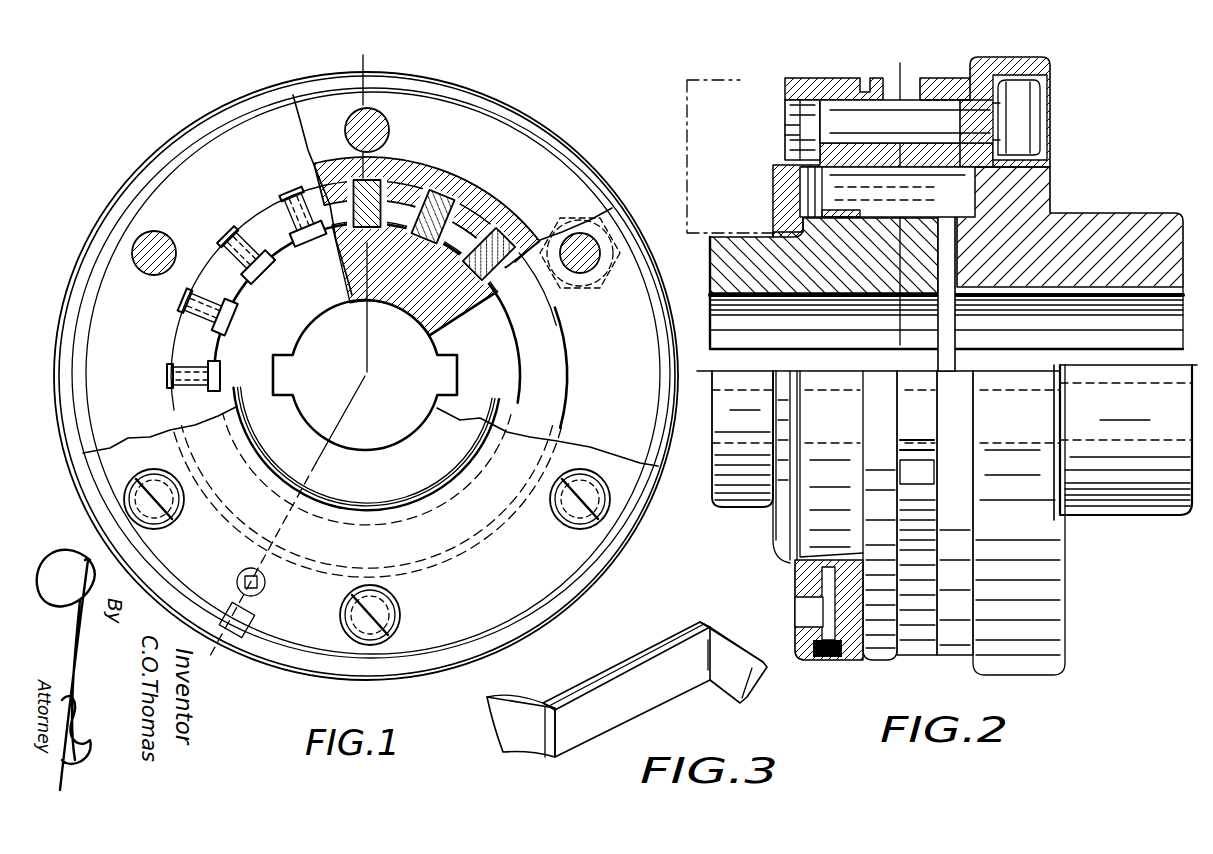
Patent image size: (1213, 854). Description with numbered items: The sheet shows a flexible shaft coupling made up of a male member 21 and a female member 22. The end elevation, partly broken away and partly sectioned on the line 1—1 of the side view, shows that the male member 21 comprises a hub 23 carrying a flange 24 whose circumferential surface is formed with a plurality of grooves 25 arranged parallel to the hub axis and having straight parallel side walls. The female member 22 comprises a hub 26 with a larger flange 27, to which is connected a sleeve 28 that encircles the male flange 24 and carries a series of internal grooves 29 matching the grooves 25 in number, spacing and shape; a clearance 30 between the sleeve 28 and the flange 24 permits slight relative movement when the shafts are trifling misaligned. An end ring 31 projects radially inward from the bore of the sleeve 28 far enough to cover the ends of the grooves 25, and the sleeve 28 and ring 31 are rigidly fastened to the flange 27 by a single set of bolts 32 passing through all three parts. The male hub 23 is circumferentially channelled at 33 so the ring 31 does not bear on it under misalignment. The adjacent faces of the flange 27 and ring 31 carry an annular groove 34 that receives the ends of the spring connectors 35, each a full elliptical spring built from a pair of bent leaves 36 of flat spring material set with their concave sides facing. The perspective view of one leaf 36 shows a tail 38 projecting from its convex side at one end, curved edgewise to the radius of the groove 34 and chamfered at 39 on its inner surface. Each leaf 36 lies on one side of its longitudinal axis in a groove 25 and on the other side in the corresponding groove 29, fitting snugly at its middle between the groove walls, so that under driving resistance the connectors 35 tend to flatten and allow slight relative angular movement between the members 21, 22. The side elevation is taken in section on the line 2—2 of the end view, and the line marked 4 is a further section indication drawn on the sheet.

In FIG. 2, the section line 1— 1 is at (900, 193).
In FIG. 1, the section line 2— 2 is at (280, 361).
In FIG. 2, the section line 4- 4 is at (800, 183).
In FIG. 1, the male member 21 is at (453, 300).
In FIG. 2, the male member 21 is at (757, 490).
In FIG. 1, the female member 22 is at (367, 376).
In FIG. 2, the female member 22 is at (1123, 474).
In FIG. 1, the hub 23 is at (367, 366).
In FIG. 2, the hub 23 is at (712, 253).
In FIG. 1, the flange 24 is at (365, 346).
In FIG. 2, the flange 24 is at (897, 227).
In FIG. 1, the grooves 25 is at (225, 322).
In FIG. 2, the grooves 25 is at (870, 217).
In FIG. 2, the hub 26 is at (1147, 211).
In FIG. 1, the flange 27 is at (493, 98).
In FIG. 2, the flange 27 is at (1050, 61).
In FIG. 1, the sleeve 28 is at (317, 113).
In FIG. 2, the sleeve 28 is at (935, 78).
In FIG. 1, the internal grooves 29 is at (440, 192).
In FIG. 2, the internal grooves 29 is at (853, 143).
In FIG. 1, the clearance 30 is at (555, 305).
In FIG. 2, the clearance 30 is at (780, 158).
In FIG. 1, the end ring 31 is at (367, 557).
In FIG. 2, the end ring 31 is at (810, 78).
In FIG. 1, the bolts 32 is at (390, 128).
In FIG. 2, the bolts 32 is at (910, 121).
In FIG. 2, the circumferential channel 33 is at (805, 240).
In FIG. 1, the annular groove 34 is at (540, 397).
In FIG. 2, the annular groove 34 is at (800, 197).
In FIG. 1, the spring connector 35 is at (487, 222).
In FIG. 2, the spring connector 35 is at (973, 190).
In FIG. 3, the spring connector 35 is at (636, 632).
In FIG. 1, the bent leaves 36 is at (497, 238).
In FIG. 3, the bent leaves 36 is at (643, 660).
In FIG. 1, the tail 38 is at (183, 338).
In FIG. 2, the tail 38 is at (800, 190).
In FIG. 3, the tail 38 is at (510, 697).
In FIG. 3, the chamfer 39 is at (753, 687).